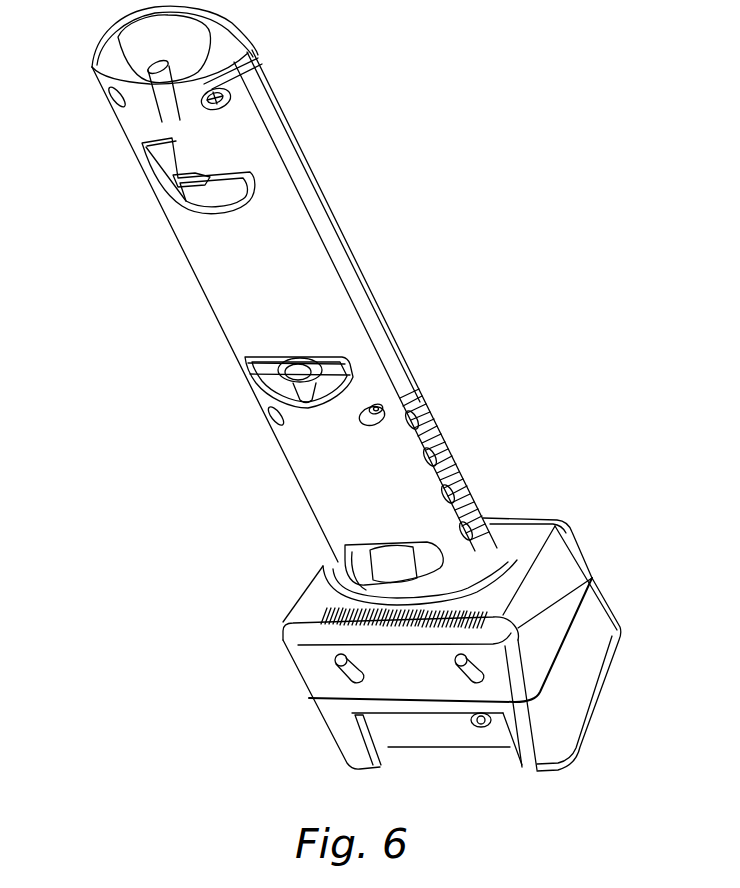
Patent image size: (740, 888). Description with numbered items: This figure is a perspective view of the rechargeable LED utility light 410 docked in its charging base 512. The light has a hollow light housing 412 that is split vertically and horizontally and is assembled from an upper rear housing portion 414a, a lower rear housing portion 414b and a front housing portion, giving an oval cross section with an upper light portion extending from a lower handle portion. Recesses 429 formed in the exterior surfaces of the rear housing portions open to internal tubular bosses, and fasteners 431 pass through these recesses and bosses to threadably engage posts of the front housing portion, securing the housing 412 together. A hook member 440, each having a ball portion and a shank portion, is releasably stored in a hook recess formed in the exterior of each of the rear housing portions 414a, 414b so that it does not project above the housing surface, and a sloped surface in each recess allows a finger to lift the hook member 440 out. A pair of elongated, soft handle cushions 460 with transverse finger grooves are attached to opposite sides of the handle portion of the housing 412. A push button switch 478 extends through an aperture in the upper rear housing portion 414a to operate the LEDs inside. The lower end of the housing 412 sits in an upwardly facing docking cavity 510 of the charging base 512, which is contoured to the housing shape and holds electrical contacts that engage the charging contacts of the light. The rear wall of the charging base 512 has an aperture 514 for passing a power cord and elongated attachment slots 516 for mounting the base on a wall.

The rechargeable LED utility light 410 is at (370, 146).
The light housing 412 is at (293, 123).
The upper rear housing portion 414a is at (304, 250).
The lower rear housing portion 414b is at (410, 485).
The recess 429 is at (126, 104).
The fastener 431 is at (225, 112).
The hook member 440 is at (163, 101).
The handle cushion 460 is at (420, 411).
The switch 478 is at (297, 370).
The docking cavity 510 is at (502, 536).
The charging base 512 is at (569, 517).
The aperture 514 is at (482, 727).
The attachment slot 516 is at (455, 679).